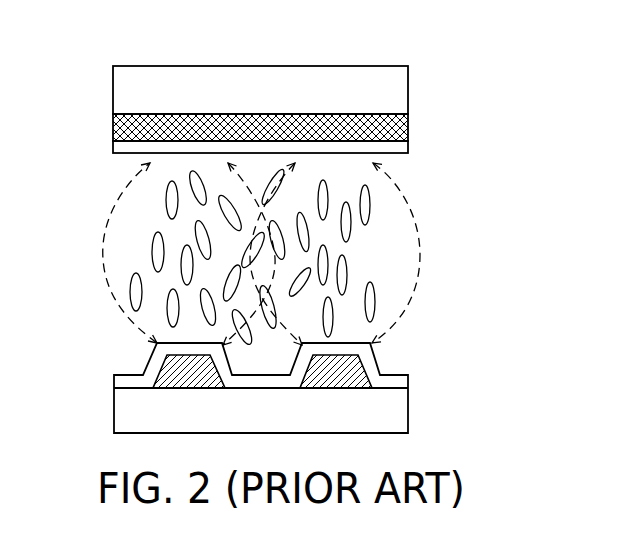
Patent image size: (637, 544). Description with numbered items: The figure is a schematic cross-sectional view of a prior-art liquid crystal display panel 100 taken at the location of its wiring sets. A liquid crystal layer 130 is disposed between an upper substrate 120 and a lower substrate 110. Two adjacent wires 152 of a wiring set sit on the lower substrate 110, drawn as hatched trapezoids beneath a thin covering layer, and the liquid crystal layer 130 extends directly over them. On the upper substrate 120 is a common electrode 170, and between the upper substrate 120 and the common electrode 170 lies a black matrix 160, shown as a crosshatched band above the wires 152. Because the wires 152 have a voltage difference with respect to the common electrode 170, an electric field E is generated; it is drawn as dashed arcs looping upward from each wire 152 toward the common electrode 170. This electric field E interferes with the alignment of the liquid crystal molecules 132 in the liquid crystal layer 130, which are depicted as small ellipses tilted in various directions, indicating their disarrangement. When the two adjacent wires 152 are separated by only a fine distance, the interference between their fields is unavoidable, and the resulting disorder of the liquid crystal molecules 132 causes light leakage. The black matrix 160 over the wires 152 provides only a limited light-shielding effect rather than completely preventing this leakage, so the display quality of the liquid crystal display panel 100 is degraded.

The liquid crystal display panel 100 is at (296, 263).
The lower substrate 110 is at (382, 410).
The upper substrate 120 is at (366, 91).
The liquid crystal layer 130 is at (387, 260).
The liquid crystal molecule 132 is at (375, 302).
The wire 152 is at (177, 375).
The black matrix 160 is at (408, 124).
The common electrode 170 is at (392, 147).
The electric field E is at (412, 210).